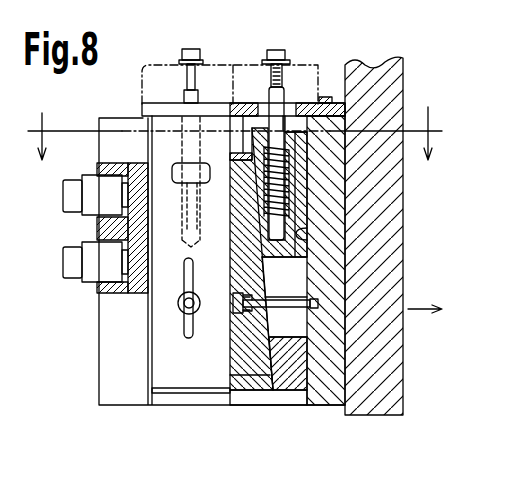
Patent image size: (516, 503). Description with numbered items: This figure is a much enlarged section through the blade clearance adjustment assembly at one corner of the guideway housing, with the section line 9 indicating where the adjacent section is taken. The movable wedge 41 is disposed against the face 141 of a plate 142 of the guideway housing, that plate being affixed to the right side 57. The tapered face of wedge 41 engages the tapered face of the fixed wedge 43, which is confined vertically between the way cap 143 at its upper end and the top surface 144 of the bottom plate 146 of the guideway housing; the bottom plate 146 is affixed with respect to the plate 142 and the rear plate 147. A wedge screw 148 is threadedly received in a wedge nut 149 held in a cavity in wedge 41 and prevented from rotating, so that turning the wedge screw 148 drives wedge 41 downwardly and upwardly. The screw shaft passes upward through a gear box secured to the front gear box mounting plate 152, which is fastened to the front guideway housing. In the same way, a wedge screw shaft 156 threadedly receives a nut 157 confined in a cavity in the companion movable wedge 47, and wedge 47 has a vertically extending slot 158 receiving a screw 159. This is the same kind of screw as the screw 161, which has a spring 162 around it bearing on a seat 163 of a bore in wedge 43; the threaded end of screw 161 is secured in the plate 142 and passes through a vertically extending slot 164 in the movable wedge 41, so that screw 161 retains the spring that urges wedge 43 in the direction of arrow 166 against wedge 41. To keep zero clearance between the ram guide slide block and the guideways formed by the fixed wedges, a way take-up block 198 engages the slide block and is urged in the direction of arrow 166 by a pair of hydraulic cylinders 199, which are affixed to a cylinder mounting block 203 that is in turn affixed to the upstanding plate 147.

The section line 9- 9 is at (235, 134).
The wedge 41 is at (298, 208).
The wedge 43 is at (262, 373).
The wedge 47 is at (160, 230).
The right side 57 is at (358, 67).
The face 141 is at (311, 233).
The plate 142 is at (328, 405).
The way cap 143 is at (243, 150).
The top surface 144 is at (228, 372).
The bottom plate 146 is at (280, 400).
The rear plate 147 is at (108, 122).
The wedge screw 148 is at (290, 133).
The wedge nut 149 is at (290, 176).
The front gear box mounting plate 152 is at (338, 107).
The wedge screw shaft 156 is at (182, 95).
The nut 157 is at (173, 172).
The slot 158 is at (192, 335).
The screw 159 is at (182, 307).
The screw 161 is at (291, 307).
The spring 162 is at (247, 311).
The seat 163 is at (230, 288).
The slot 164 is at (295, 277).
The arrow 166 is at (426, 321).
The way take-up block 198 is at (137, 293).
The hydraulic cylinders 199 is at (67, 187).
The cylinder mounting block 203 is at (95, 285).